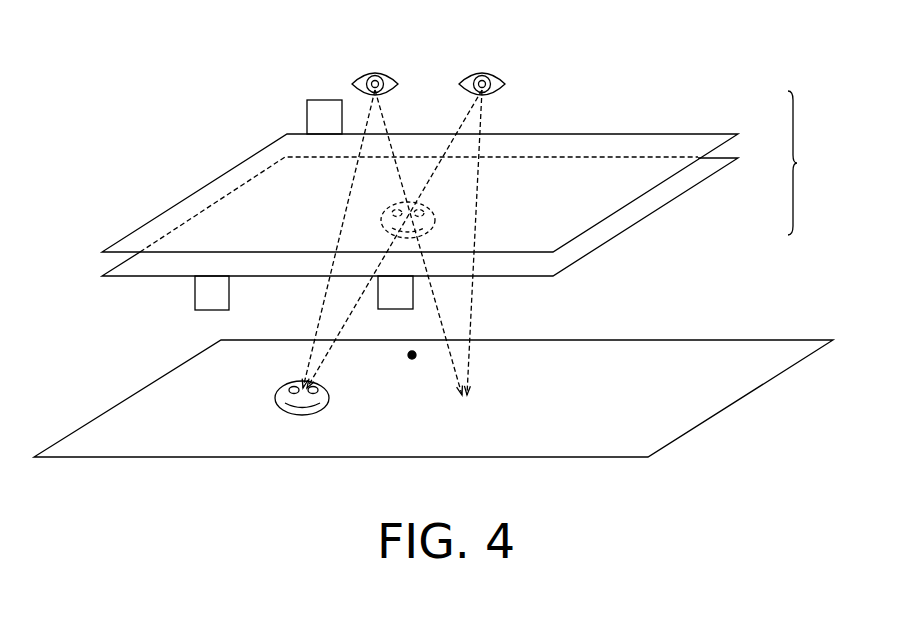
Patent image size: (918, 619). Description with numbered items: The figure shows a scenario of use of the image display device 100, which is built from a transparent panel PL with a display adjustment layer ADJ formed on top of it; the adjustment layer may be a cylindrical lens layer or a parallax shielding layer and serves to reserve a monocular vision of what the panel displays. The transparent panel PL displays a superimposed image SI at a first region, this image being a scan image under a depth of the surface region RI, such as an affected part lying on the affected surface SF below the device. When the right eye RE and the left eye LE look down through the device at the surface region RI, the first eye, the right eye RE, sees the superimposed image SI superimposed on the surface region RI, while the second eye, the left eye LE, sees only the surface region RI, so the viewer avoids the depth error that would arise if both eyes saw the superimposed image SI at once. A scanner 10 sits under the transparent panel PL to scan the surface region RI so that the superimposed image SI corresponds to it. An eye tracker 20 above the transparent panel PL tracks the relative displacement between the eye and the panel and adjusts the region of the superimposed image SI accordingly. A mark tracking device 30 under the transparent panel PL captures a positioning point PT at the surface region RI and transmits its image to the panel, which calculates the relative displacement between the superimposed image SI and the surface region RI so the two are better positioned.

The image display device 100 is at (813, 163).
The display adjustment layer ADJ is at (675, 134).
The transparent panel PL is at (671, 200).
The eye tracker 20 is at (307, 116).
The scanner 10 is at (195, 290).
The mark tracking device 30 is at (413, 292).
The affected surface SF is at (768, 340).
The superimposed image SI is at (435, 213).
The surface region RI is at (330, 395).
The positioning point PT is at (412, 355).
The left eye LE is at (390, 76).
The right eye RE is at (497, 76).